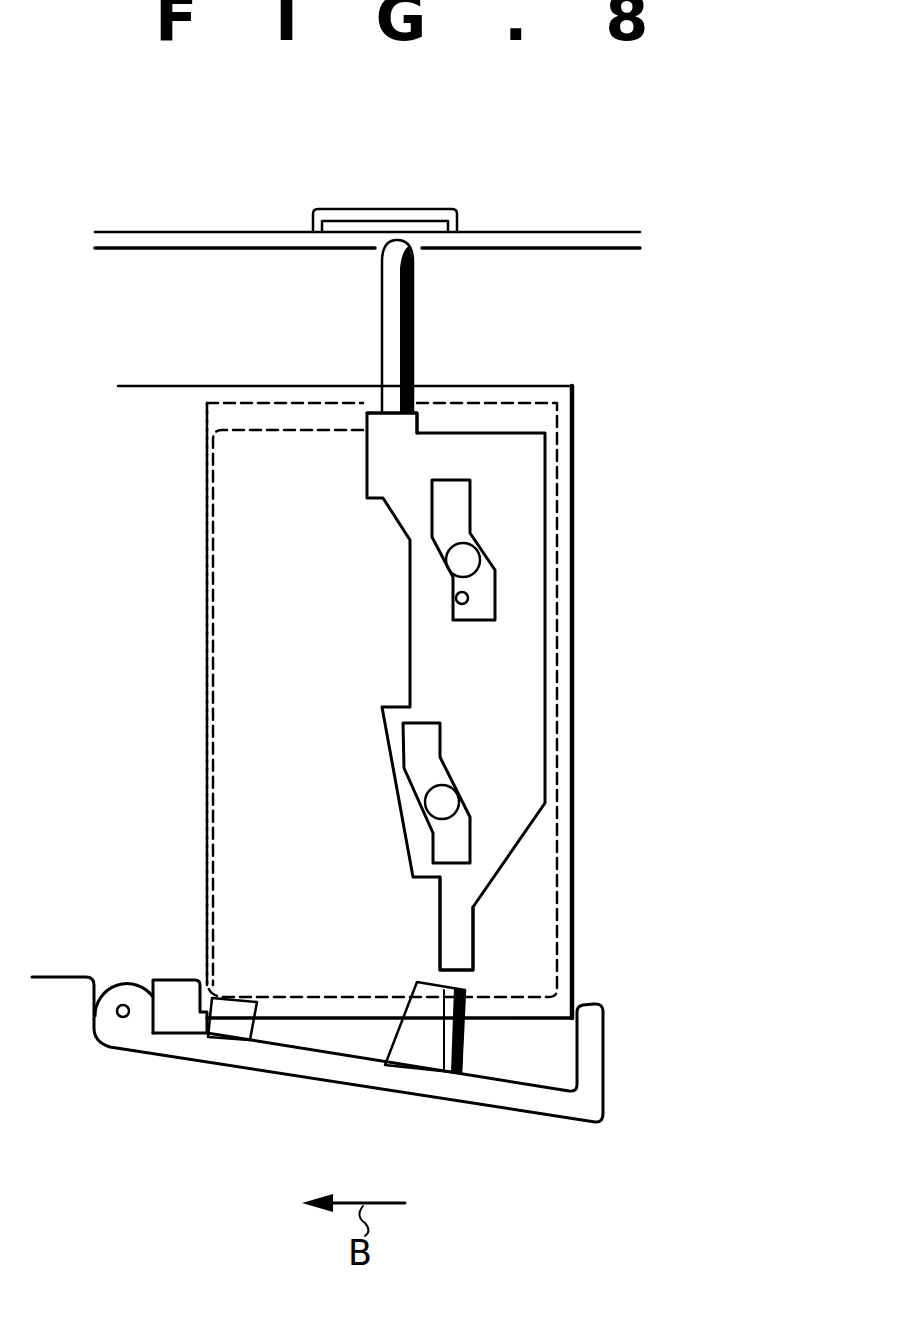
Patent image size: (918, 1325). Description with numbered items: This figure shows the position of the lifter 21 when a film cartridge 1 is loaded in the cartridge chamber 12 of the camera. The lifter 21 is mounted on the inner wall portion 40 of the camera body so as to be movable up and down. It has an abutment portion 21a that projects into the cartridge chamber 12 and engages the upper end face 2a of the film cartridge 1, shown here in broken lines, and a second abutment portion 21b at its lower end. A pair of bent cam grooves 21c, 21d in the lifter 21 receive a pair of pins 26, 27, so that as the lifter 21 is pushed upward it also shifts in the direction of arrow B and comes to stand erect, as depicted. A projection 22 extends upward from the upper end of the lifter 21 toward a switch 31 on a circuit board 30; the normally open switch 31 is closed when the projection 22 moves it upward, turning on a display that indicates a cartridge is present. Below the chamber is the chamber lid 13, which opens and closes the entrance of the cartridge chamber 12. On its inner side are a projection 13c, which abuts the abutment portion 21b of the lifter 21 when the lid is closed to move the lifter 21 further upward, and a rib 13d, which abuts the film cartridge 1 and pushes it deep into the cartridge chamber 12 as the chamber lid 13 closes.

The film cartridge 1 is at (248, 550).
The upper end face 2a is at (275, 430).
The cartridge chamber 12 is at (215, 778).
The chamber lid 13 is at (297, 1067).
The projection 13c is at (433, 1050).
The rib 13d is at (223, 1028).
The lifter 21 is at (510, 687).
The abutment portion 21a is at (360, 403).
The abutment portion 21b is at (457, 940).
The cam groove 21c is at (455, 598).
The cam groove 21d is at (412, 752).
The projection 22 is at (413, 297).
The pin 26 is at (460, 557).
The pin 27 is at (443, 807).
The circuit board 30 is at (548, 240).
The switch 31 is at (452, 211).
The inner wall portion 40 is at (163, 412).